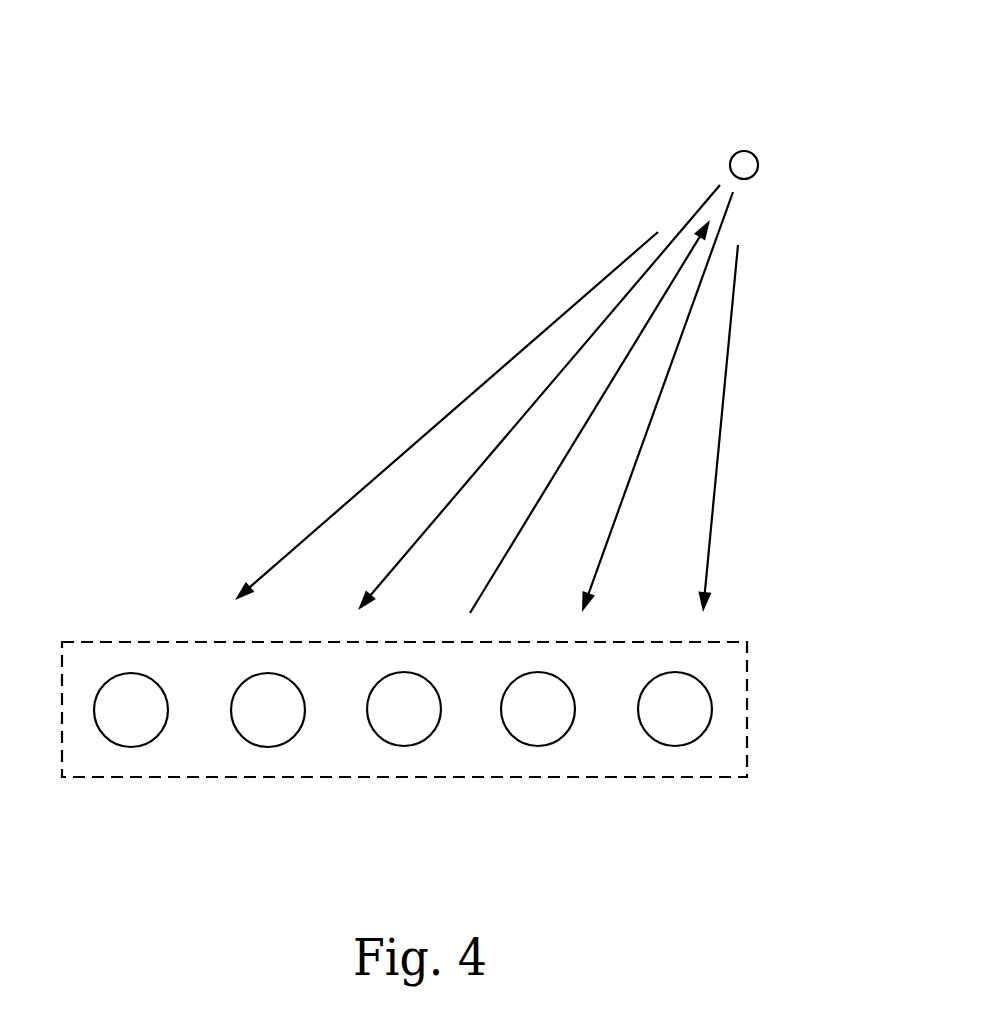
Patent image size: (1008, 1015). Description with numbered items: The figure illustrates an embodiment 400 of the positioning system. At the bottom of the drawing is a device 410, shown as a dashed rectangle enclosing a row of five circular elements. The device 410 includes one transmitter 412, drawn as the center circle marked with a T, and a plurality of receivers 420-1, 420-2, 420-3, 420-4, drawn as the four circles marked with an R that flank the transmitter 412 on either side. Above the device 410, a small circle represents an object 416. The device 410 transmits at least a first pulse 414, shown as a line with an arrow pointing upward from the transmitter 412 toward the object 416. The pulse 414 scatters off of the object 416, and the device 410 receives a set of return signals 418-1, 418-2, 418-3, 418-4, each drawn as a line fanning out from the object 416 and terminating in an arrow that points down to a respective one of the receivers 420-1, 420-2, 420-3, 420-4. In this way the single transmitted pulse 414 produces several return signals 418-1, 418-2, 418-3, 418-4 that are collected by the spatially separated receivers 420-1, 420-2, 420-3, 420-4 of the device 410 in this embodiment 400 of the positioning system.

The embodiment of the positioning system 400 is at (427, 108).
The device 410 is at (747, 718).
The transmitter 412 is at (380, 741).
The first pulse 414 is at (565, 458).
The object 416 is at (750, 153).
The return signal 418-1 is at (532, 337).
The return signal 418-2 is at (515, 428).
The return signal 418-3 is at (657, 402).
The return signal 418-4 is at (732, 330).
The receiver 420-1 is at (110, 742).
The receiver 420-2 is at (245, 740).
The receiver 420-3 is at (515, 741).
The receiver 420-4 is at (652, 741).